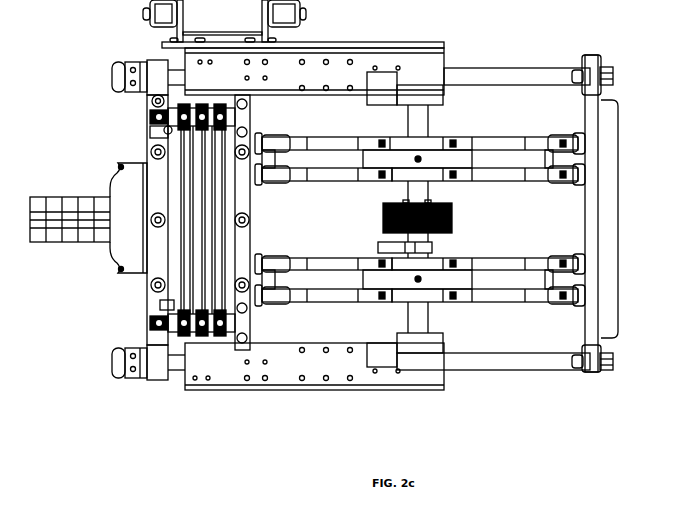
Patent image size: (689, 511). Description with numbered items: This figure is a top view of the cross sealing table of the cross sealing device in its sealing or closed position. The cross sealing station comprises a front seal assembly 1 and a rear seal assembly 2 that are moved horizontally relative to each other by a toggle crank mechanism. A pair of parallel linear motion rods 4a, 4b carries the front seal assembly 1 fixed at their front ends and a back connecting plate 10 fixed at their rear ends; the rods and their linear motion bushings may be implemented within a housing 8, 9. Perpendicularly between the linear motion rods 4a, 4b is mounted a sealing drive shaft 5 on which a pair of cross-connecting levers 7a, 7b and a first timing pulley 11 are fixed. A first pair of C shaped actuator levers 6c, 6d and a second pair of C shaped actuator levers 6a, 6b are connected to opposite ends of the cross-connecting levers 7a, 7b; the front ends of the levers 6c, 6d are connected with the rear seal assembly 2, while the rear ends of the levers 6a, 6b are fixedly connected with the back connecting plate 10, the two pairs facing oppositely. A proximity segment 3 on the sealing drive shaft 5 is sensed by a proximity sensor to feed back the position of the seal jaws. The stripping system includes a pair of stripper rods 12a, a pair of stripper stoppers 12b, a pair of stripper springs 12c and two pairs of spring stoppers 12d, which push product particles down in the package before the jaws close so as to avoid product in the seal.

The front seal assembly 1 is at (112, 190).
The rear seal assembly 2 is at (252, 199).
The proximity segment 3 is at (433, 250).
The linear motion rod 4a is at (510, 68).
The linear motion rod 4b is at (524, 372).
The sealing drive shaft 5 is at (372, 137).
The C shaped actuator lever 6a is at (513, 168).
The C shaped actuator lever 6b is at (533, 272).
The C shaped actuator lever 6c is at (340, 168).
The C shaped actuator lever 6d is at (340, 270).
The cross-connecting lever 7a is at (430, 150).
The cross-connecting lever 7b is at (435, 290).
The housing 8 is at (365, 48).
The housing 9 is at (312, 390).
The back connecting plate 10 is at (600, 237).
The first timing pulley 11 is at (452, 216).
The stripper rod 12a is at (200, 272).
The stripper stopper 12b is at (148, 126).
The stripper spring 12c is at (148, 322).
The spring stopper 12d is at (157, 118).